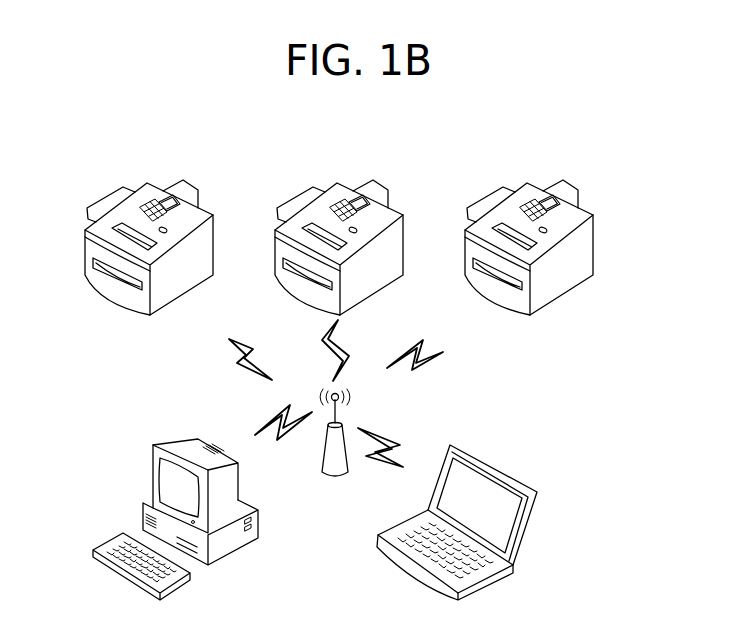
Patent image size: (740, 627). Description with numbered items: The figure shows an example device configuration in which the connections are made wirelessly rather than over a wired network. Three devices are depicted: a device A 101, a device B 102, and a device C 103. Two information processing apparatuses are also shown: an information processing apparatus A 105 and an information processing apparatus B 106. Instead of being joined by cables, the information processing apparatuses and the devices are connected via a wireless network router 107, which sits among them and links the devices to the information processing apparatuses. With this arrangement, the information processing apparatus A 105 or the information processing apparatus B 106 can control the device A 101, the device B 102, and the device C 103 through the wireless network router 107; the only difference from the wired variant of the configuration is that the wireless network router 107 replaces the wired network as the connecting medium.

The device A 101 is at (150, 183).
The device B 102 is at (340, 183).
The device C 103 is at (530, 183).
The information processing apparatus A 105 is at (152, 463).
The information processing apparatus B 106 is at (497, 470).
The wireless network router 107 is at (335, 478).